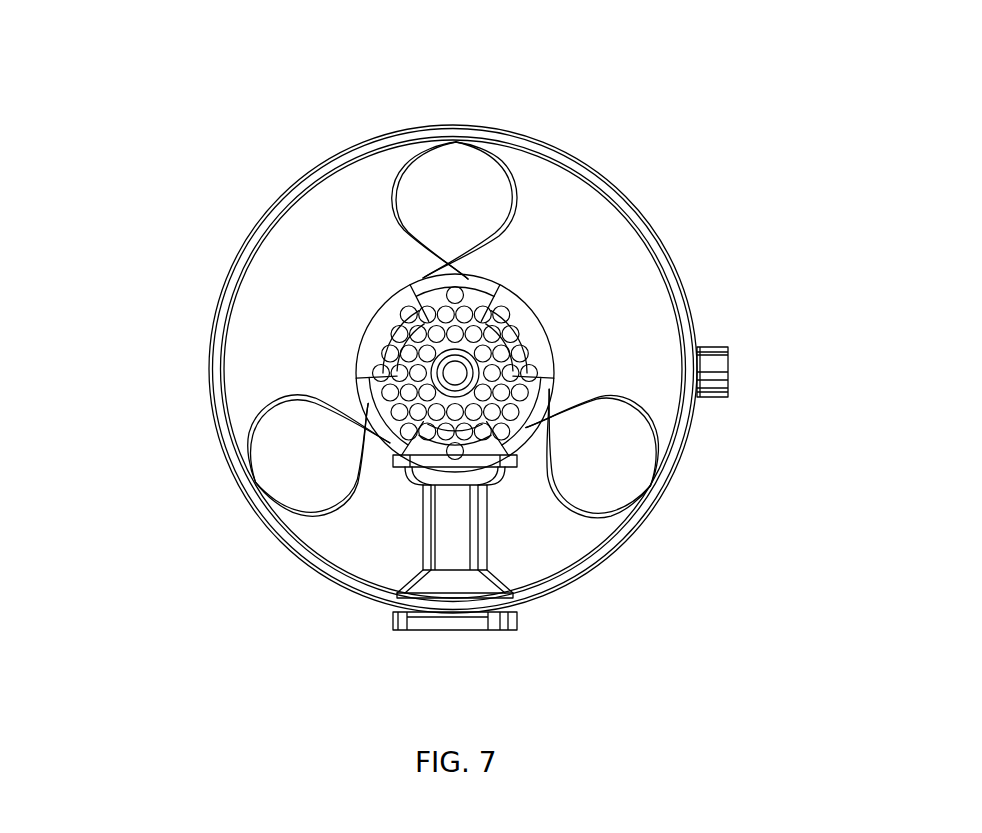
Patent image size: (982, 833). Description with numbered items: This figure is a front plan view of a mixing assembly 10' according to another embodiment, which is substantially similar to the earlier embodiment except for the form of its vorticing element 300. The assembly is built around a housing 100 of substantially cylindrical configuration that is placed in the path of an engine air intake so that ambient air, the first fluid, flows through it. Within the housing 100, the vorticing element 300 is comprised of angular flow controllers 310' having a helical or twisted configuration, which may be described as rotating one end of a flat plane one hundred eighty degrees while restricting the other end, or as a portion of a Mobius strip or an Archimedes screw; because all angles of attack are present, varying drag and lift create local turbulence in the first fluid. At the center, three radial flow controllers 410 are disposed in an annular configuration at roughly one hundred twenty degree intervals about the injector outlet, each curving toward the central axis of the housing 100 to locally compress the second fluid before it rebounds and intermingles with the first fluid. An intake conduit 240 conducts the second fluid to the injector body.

The mixing assembly 10' is at (430, 342).
The housing 100 is at (212, 333).
The vorticing element 300 is at (350, 197).
The angular flow controller 310' is at (432, 301).
The radial flow controller 410 is at (385, 328).
The intake conduit 240 is at (392, 620).